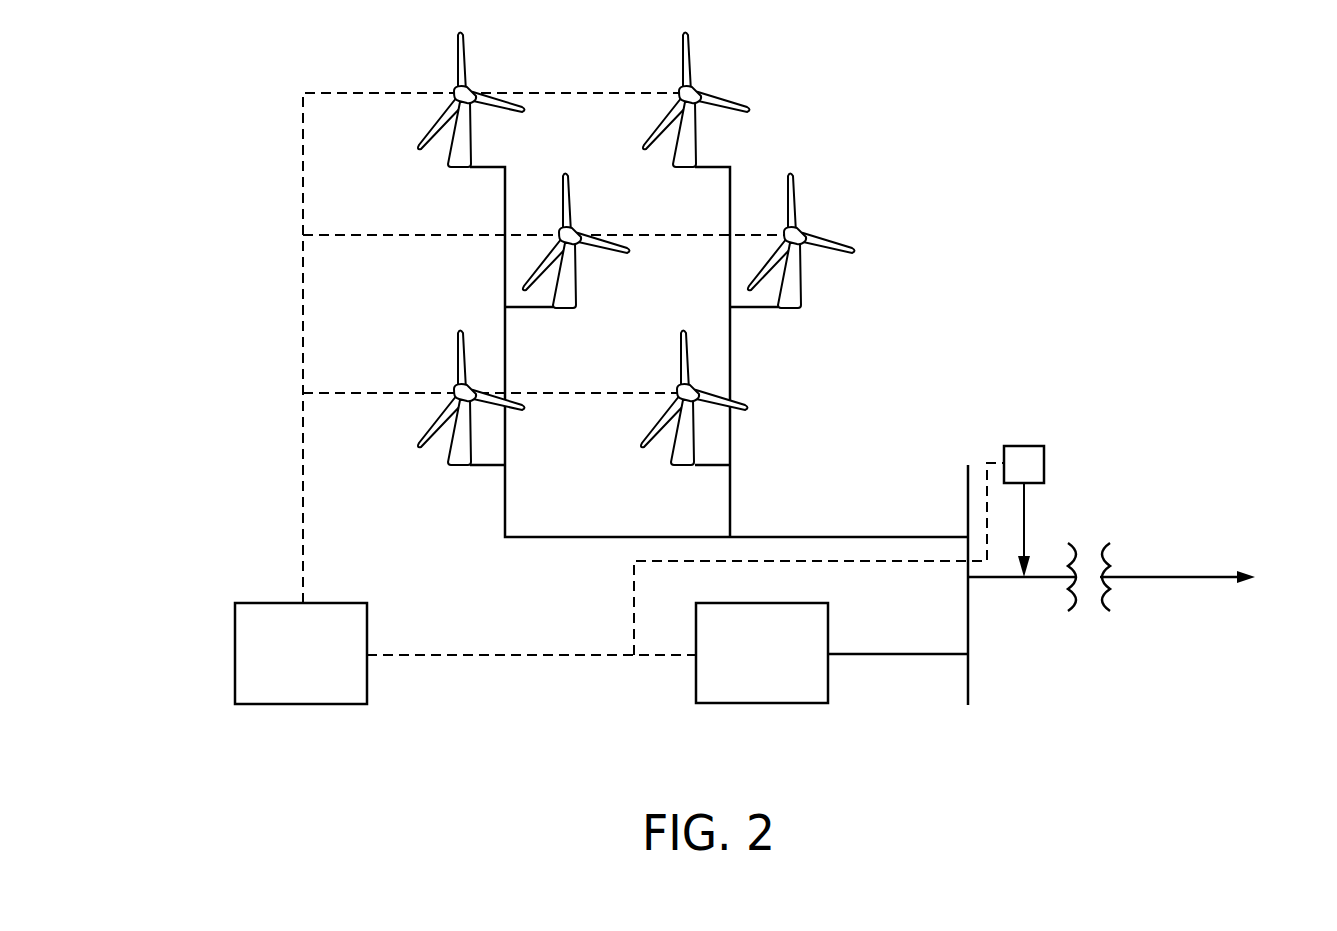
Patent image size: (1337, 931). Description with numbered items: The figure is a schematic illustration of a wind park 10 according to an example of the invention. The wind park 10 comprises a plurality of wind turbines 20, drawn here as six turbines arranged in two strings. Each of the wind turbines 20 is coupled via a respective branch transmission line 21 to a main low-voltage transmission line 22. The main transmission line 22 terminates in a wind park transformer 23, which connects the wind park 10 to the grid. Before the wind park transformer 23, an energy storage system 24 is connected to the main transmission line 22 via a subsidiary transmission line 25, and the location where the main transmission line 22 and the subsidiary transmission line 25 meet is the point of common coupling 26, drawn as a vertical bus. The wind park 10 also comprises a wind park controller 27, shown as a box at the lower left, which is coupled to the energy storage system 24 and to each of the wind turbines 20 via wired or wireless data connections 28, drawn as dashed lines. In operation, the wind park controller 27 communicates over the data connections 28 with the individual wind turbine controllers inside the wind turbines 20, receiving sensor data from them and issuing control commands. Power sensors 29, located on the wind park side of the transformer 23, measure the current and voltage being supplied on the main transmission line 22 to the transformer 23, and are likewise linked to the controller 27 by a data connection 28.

The wind park 10 is at (1090, 170).
The wind turbines 20 is at (469, 86).
The branch transmission lines 21 is at (506, 510).
The main low-voltage transmission line 22 is at (915, 535).
The wind park transformer 23 is at (1088, 612).
The energy storage system 24 is at (765, 704).
The subsidiary transmission line 25 is at (905, 657).
The point of common coupling 26 is at (970, 639).
The wind park controller 27 is at (290, 705).
The data connections 28 is at (303, 178).
The power sensors 29 is at (1044, 464).